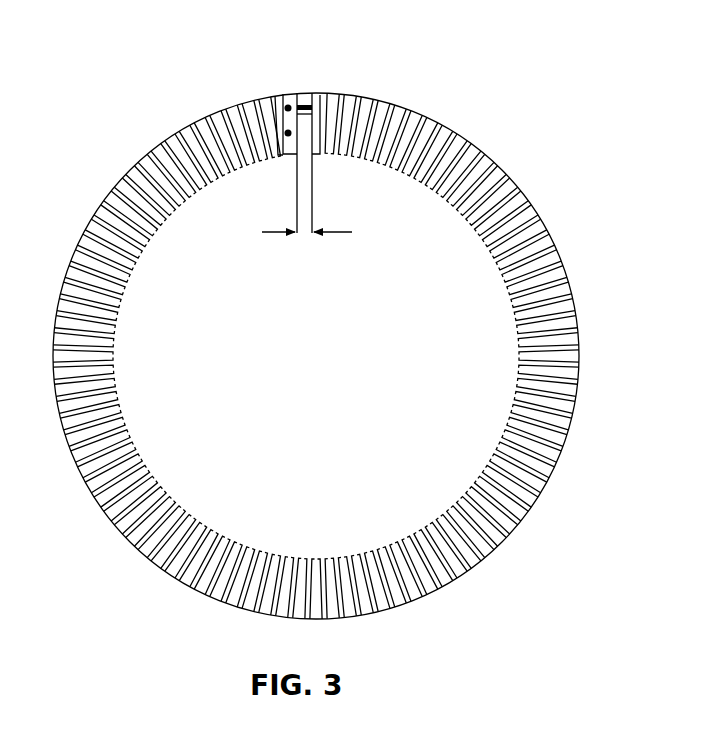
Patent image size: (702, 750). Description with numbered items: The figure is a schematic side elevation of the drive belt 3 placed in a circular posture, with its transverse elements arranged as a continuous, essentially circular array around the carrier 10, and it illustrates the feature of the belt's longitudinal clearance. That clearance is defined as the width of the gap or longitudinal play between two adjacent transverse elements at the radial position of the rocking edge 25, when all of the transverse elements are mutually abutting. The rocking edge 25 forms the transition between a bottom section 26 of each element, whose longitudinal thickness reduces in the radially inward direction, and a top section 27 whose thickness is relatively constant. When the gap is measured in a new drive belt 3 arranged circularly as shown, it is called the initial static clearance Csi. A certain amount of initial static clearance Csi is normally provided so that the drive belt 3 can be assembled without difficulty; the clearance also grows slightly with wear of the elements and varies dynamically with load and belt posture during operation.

The drive belt 3 is at (150, 100).
The carrier 10 is at (304, 97).
The rocking edge 25 is at (293, 123).
The bottom section 26 is at (288, 133).
The top section 27 is at (288, 108).
The initial static clearance Csi is at (307, 233).